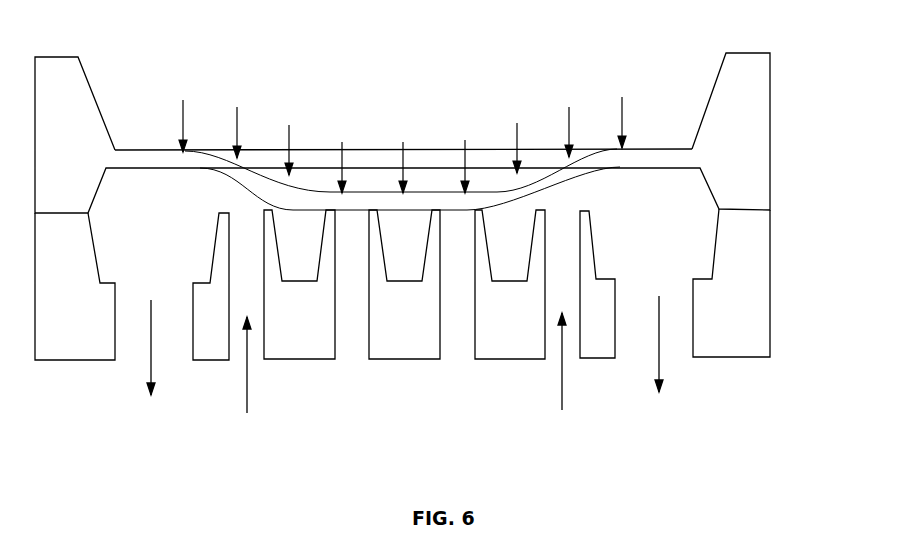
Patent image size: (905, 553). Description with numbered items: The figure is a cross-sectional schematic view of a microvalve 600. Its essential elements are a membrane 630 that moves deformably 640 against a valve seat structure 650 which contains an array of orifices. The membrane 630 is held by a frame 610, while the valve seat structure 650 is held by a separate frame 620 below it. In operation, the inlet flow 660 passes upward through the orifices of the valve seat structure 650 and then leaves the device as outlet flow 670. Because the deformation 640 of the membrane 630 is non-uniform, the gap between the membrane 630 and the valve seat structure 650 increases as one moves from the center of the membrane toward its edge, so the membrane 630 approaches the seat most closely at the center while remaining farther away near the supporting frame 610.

The microvalve 600 is at (434, 227).
The frame 610 is at (434, 133).
The frame 620 is at (434, 284).
The membrane 630 is at (368, 148).
The membrane deformation 640 is at (482, 192).
The valve seat structure 650 is at (588, 209).
The inlet flow 660 is at (404, 383).
The outlet flow 670 is at (395, 364).